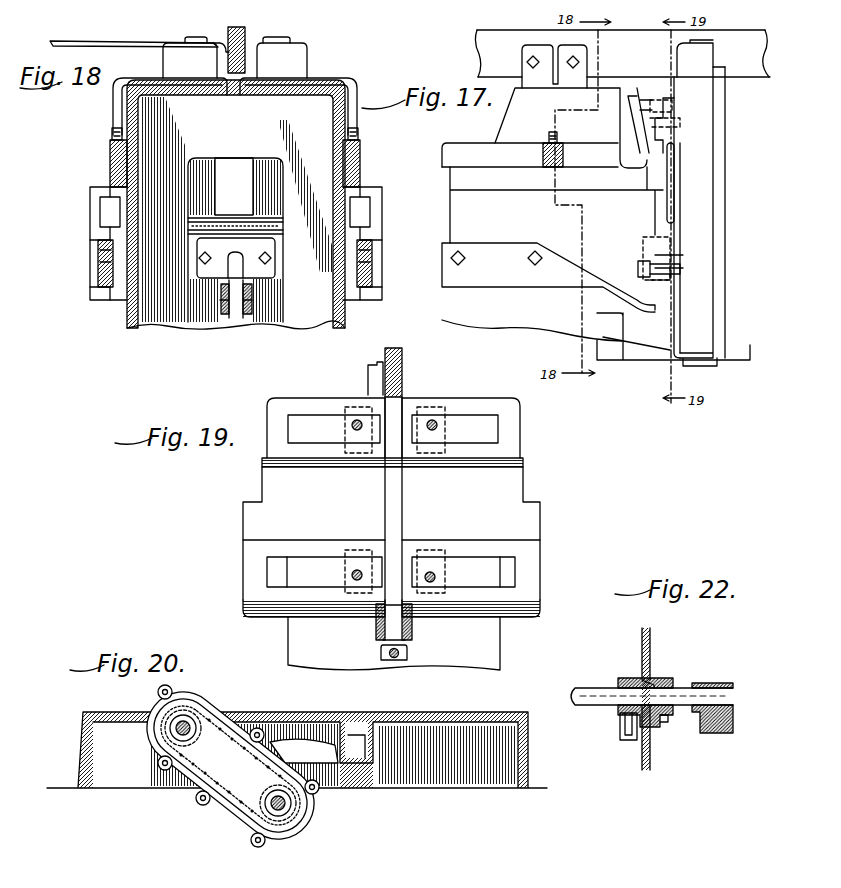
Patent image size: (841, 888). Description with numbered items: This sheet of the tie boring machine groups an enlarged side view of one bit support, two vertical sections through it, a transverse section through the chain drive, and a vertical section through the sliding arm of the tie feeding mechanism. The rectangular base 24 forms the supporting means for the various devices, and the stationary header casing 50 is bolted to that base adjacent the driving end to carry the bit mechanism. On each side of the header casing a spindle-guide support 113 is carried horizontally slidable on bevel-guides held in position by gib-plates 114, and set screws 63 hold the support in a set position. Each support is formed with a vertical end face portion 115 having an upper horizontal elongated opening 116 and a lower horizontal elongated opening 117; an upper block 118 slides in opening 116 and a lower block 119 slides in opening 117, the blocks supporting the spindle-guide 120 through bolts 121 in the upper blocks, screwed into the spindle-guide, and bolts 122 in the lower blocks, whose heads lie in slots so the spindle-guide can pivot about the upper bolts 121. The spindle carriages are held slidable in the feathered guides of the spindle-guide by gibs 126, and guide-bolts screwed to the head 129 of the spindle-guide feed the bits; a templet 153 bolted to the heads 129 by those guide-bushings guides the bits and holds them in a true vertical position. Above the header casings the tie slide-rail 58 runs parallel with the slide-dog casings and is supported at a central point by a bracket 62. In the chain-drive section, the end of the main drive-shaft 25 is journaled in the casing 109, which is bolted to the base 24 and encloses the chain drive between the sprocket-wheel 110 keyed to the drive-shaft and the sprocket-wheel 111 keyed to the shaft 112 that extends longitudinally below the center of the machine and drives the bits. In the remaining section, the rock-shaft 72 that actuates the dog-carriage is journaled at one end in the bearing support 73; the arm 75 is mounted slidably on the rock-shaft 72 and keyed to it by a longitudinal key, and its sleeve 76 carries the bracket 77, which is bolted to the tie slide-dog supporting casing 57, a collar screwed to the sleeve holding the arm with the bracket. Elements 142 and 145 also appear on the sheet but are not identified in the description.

In FIG. 20, the rectangular base 24 is at (423, 773).
In FIG. 20, the initial drive-shaft 25 is at (190, 732).
In FIG. 18, the stationary header casing 50 is at (168, 318).
In FIG. 17, the stationary header casing 50 is at (497, 312).
In FIG. 19, the stationary header casing 50 is at (394, 643).
In FIG. 22, the tie slide-dog supporting casing 57 is at (650, 650).
In FIG. 18, the tie slide-rail 58 is at (246, 38).
In FIG. 17, the tie slide-rail 58 is at (477, 42).
In FIG. 19, the tie slide-rail 58 is at (403, 380).
In FIG. 17, the bracket 62 is at (522, 62).
In FIG. 19, the bracket 62 is at (368, 372).
In FIG. 18, the set screw 63 is at (112, 133).
In FIG. 17, the set screw 63 is at (549, 136).
In FIG. 22, the rock-shaft 72 is at (600, 700).
In FIG. 22, the bearing support 73 is at (716, 726).
In FIG. 22, the arm 75 is at (621, 728).
In FIG. 22, the sleeve 76 is at (665, 721).
In FIG. 22, the bracket 77 is at (662, 680).
In FIG. 20, the casing 109 is at (216, 710).
In FIG. 20, the sprocket-wheel 110 is at (162, 708).
In FIG. 20, the sprocket-wheel 111 is at (294, 808).
In FIG. 20, the bit drive-shaft 112 is at (268, 808).
In FIG. 18, the spindle-guide support 113 is at (100, 187).
In FIG. 17, the spindle-guide support 113 is at (520, 224).
In FIG. 19, the spindle-guide support 113 is at (243, 512).
In FIG. 18, the gib-plate 114 is at (105, 262).
In FIG. 17, the gib-plate 114 is at (512, 258).
In FIG. 18, the vertical end face portion 115 is at (152, 77).
In FIG. 17, the vertical end face portion 115 is at (668, 178).
In FIG. 19, the vertical end face portion 115 is at (322, 500).
In FIG. 17, the upper horizontal elongated opening 116 is at (663, 136).
In FIG. 19, the upper horizontal elongated opening 116 is at (410, 450).
In FIG. 17, the lower horizontal elongated opening 117 is at (668, 278).
In FIG. 19, the lower horizontal elongated opening 117 is at (421, 553).
In FIG. 17, the upper block 118 is at (660, 112).
In FIG. 19, the upper block 118 is at (370, 438).
In FIG. 17, the lower block 119 is at (665, 262).
In FIG. 19, the lower block 119 is at (426, 582).
In FIG. 17, the spindle-guide 120 is at (665, 205).
In FIG. 17, the bolt 121 is at (645, 100).
In FIG. 19, the bolt 121 is at (351, 426).
In FIG. 17, the bolt 122 is at (638, 266).
In FIG. 19, the bolt 122 is at (351, 576).
In FIG. 17, the gib 126 is at (725, 282).
In FIG. 18, the head 129 is at (195, 60).
In FIG. 17, the head 129 is at (695, 58).
In FIG. 17, the bracket 142 is at (650, 357).
In FIG. 18, the fork 145 is at (238, 318).
In FIG. 19, the fork 145 is at (385, 637).
In FIG. 18, the templet 153 is at (139, 39).